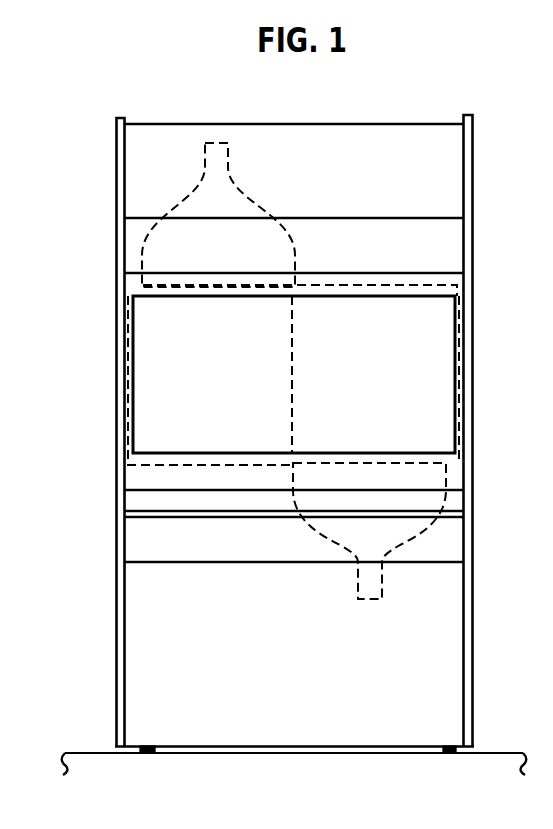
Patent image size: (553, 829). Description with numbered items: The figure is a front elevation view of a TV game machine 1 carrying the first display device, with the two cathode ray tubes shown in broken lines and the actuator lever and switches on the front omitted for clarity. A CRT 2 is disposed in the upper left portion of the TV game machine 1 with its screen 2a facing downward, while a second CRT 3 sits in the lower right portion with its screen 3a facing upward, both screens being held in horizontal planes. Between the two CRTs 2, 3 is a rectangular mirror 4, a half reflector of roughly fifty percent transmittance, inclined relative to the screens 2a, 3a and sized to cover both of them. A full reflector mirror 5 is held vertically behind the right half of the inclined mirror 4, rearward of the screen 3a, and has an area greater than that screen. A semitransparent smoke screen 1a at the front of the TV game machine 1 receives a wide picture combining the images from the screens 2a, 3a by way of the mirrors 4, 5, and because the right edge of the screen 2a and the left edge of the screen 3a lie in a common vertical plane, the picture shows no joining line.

The TV game machine 1 is at (473, 181).
The smoke screen 1a is at (158, 416).
The CRT 2 is at (237, 197).
The screen 2a is at (197, 297).
The CRT 3 is at (358, 572).
The screen 3a is at (355, 453).
The mirror 4 is at (147, 361).
The mirror 5 is at (290, 412).